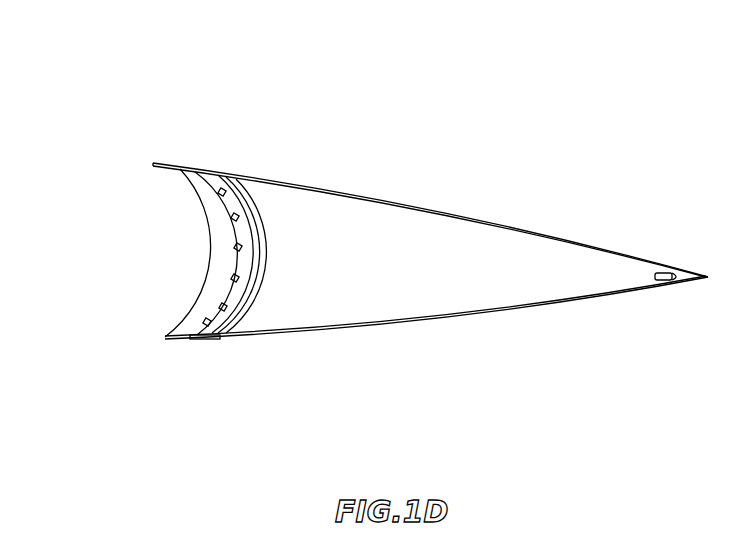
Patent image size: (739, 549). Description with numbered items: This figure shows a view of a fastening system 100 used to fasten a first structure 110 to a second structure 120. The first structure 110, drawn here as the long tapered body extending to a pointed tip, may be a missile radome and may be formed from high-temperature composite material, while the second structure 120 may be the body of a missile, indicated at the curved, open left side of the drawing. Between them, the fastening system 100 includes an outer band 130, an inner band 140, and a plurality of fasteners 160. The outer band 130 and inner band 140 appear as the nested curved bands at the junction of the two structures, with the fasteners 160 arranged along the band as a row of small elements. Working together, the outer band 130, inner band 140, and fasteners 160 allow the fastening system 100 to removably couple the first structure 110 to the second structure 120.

The fastening system 100 is at (163, 58).
The first structure 110 is at (460, 244).
The second structure 120 is at (200, 308).
The outer band 130 is at (205, 338).
The inner band 140 is at (238, 230).
The fasteners 160 is at (246, 237).